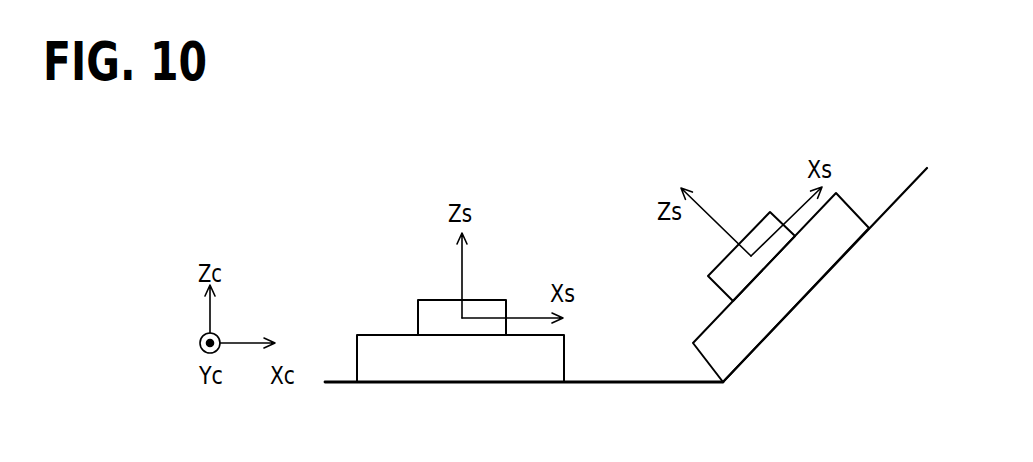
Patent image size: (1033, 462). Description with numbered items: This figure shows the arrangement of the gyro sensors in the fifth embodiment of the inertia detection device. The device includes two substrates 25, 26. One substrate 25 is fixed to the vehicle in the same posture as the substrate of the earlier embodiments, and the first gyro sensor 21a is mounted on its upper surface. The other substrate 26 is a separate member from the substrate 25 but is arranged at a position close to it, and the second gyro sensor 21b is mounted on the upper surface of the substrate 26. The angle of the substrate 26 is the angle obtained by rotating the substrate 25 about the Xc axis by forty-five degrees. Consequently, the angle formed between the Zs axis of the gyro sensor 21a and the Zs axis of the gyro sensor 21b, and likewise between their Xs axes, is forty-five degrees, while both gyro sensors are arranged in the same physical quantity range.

The substrate 25 is at (355, 316).
The first gyro sensor 21a is at (420, 300).
The substrate 26 is at (690, 304).
The second gyro sensor 21b is at (753, 227).